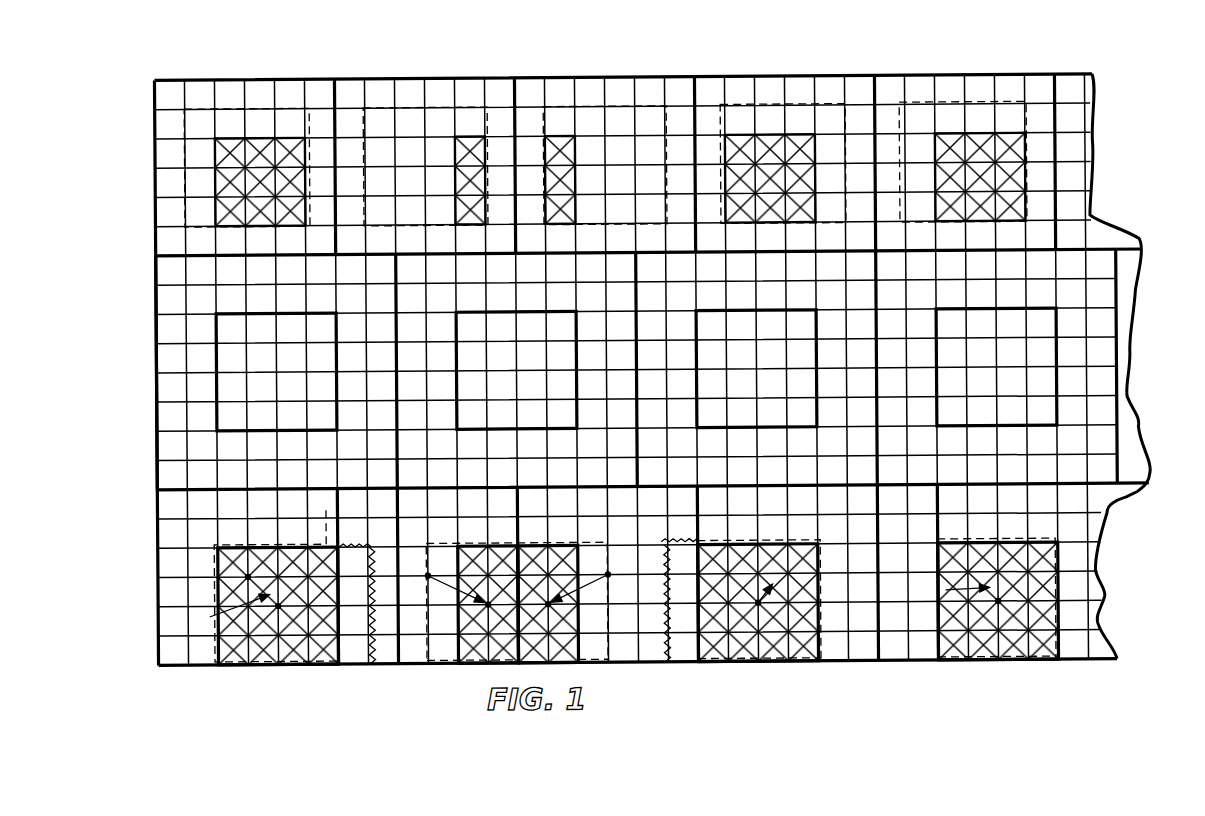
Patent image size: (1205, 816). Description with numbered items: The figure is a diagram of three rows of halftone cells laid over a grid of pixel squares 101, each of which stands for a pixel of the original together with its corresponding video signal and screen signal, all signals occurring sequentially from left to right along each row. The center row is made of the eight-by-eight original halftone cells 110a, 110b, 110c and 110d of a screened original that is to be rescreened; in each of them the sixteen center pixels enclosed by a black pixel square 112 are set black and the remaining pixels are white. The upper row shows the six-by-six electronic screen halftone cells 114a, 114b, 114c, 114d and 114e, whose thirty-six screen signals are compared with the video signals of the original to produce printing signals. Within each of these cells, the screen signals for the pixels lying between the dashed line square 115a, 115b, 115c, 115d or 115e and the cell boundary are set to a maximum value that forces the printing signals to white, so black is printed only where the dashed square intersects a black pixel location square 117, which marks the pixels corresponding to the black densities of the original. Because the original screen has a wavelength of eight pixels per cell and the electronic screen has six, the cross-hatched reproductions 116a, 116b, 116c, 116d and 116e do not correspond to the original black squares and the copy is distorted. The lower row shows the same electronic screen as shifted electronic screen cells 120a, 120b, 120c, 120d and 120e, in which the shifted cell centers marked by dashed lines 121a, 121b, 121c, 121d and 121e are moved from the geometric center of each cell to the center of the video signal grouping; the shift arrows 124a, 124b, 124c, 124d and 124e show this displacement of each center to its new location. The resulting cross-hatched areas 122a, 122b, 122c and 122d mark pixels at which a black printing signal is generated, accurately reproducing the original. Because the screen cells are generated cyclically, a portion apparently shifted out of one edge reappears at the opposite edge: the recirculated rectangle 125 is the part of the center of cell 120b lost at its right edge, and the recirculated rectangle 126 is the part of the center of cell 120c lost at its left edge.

The pixel square 101 is at (173, 444).
The original halftone cell 110a is at (159, 300).
The original halftone cell 110b is at (407, 293).
The original halftone cell 110c is at (652, 293).
The original halftone cell 110d is at (888, 299).
The black pixel square 112 is at (293, 312).
The electronic screen halftone cell 114a is at (230, 77).
The electronic screen halftone cell 114b is at (405, 77).
The electronic screen halftone cell 114c is at (600, 77).
The electronic screen halftone cell 114d is at (775, 77).
The electronic screen halftone cell 114e is at (945, 75).
The dashed line square 115a is at (264, 104).
The dashed line square 115b is at (450, 104).
The dashed line square 115c is at (637, 104).
The dashed line square 115d is at (812, 103).
The dashed line square 115e is at (1005, 104).
The reproduction 116a is at (262, 117).
The reproduction 116b is at (494, 136).
The reproduction 116c is at (581, 137).
The reproduction 116d is at (760, 133).
The reproduction 116e is at (977, 133).
The black pixel location square 117 is at (215, 214).
The shifted electronic screen cell 120a is at (202, 656).
The shifted electronic screen cell 120b is at (388, 654).
The shifted electronic screen cell 120c is at (650, 650).
The shifted electronic screen cell 120d is at (831, 651).
The shifted electronic screen cell 120e is at (918, 648).
The shifted cell center 121a is at (325, 511).
The shifted cell center 121b is at (506, 542).
The shifted cell center 121c is at (590, 541).
The shifted cell center 121d is at (739, 543).
The shifted cell center 121e is at (1019, 545).
The cross-hatched area 122a is at (216, 559).
The cross-hatched area 122b is at (459, 558).
The cross-hatched area 122c is at (807, 544).
The cross-hatched area 122d is at (964, 489).
The shift arrow 124a is at (222, 602).
The shift arrow 124b is at (432, 582).
The shift arrow 124c is at (593, 590).
The shift arrow 124d is at (778, 585).
The shift arrow 124e is at (944, 592).
The recirculated rectangle 125 is at (365, 653).
The recirculated rectangle 126 is at (673, 652).